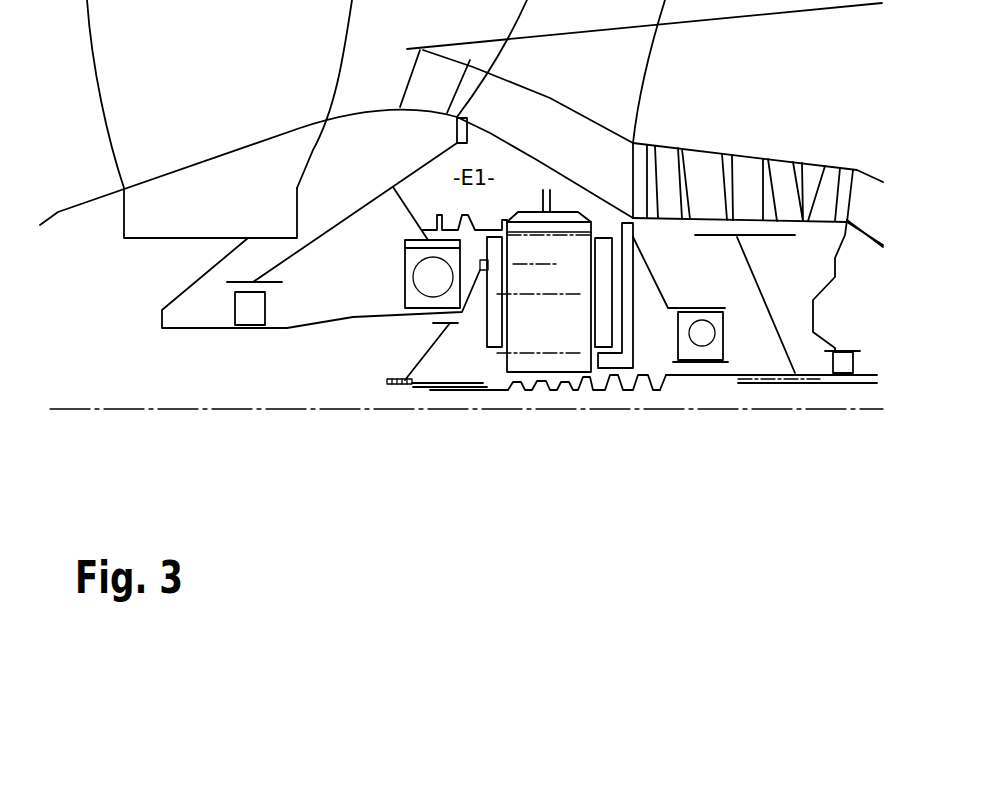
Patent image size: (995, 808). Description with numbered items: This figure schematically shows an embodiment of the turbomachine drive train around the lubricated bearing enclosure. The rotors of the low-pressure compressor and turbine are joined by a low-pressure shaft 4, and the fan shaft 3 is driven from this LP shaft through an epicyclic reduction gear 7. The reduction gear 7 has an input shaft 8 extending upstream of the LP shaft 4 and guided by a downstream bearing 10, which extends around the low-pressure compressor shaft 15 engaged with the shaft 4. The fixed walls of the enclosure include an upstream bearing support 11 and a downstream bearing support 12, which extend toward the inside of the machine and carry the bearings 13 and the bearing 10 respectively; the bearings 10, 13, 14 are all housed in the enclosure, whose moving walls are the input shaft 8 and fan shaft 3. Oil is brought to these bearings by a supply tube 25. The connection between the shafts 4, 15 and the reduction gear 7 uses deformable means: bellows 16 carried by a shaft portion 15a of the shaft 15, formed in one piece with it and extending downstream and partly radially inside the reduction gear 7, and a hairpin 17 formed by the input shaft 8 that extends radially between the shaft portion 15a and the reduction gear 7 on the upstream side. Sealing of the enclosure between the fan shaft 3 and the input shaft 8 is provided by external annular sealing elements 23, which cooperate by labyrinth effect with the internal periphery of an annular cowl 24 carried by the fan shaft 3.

The fan shaft 3 is at (350, 317).
The low-pressure shaft 4 is at (808, 387).
The reduction gear 7 is at (555, 333).
The input shaft 8 is at (400, 410).
The hairpin 17 is at (447, 383).
The downstream bearing 10 is at (702, 335).
The upstream bearing support 11 is at (325, 235).
The downstream bearing support 12 is at (653, 273).
The bearing 13 is at (252, 318).
The bearing 14 is at (427, 273).
The low-pressure compressor shaft 15 is at (722, 377).
The shaft portion 15a is at (597, 392).
The bellows 16 is at (637, 397).
The external annular sealing elements 23 is at (392, 385).
The annular cowl 24 is at (428, 353).
The supply tube 25 is at (627, 258).